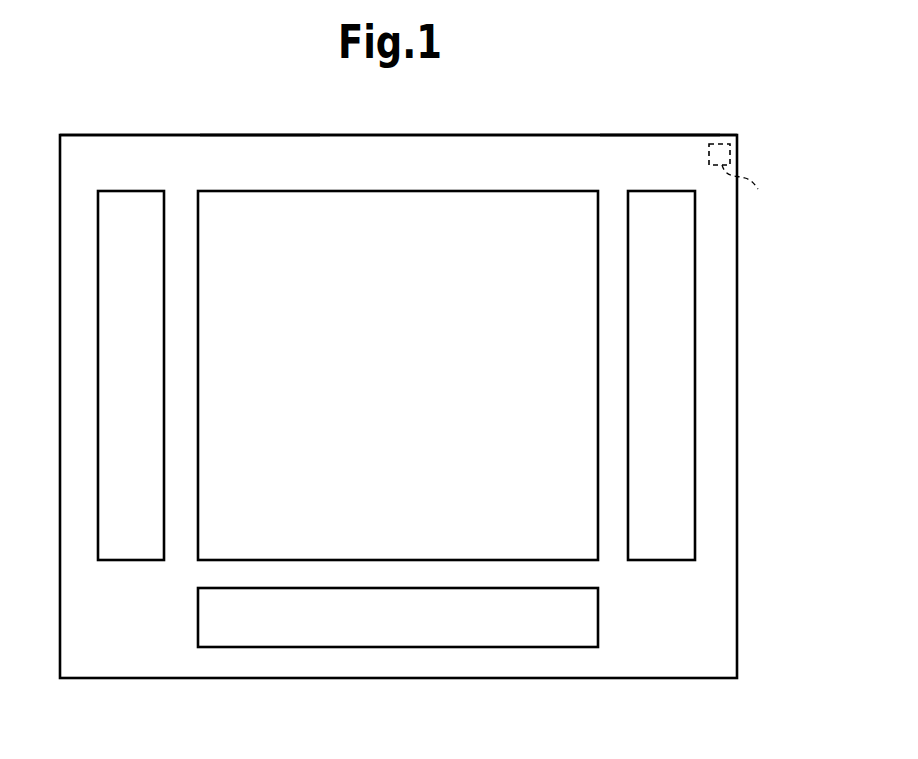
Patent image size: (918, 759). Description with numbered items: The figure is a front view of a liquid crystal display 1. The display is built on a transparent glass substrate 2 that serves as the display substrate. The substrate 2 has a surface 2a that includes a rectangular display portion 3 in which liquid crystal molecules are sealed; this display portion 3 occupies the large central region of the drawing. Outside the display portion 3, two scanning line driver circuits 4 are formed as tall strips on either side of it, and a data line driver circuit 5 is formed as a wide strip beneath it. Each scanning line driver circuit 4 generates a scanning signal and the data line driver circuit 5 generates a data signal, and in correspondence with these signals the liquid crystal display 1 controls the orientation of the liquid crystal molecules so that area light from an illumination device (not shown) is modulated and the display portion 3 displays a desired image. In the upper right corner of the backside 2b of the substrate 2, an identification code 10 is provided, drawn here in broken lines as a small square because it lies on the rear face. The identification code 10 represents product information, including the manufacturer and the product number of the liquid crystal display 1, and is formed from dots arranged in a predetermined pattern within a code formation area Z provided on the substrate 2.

The liquid crystal display 1 is at (753, 132).
The substrate 2 is at (383, 139).
The surface 2a is at (253, 144).
The backside 2b is at (661, 146).
The display portion 3 is at (411, 392).
The scanning line driver circuit 4 is at (141, 393).
The data line driver circuit 5 is at (411, 634).
The identification code 10 is at (730, 149).
The code formation area Z is at (745, 189).